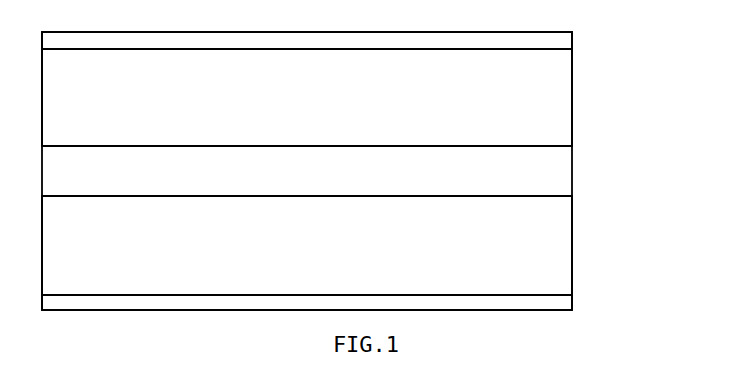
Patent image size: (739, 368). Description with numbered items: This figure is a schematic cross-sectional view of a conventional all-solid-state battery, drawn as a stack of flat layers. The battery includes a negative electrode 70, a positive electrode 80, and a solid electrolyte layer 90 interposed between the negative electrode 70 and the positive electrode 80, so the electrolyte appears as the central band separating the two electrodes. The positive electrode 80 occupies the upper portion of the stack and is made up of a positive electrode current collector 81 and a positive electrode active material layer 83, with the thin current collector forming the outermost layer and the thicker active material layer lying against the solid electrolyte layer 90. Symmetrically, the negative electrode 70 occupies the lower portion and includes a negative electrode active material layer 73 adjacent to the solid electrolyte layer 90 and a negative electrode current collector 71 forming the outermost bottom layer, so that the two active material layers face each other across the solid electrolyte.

The positive electrode 80 is at (650, 43).
The positive electrode current collector 81 is at (572, 41).
The positive electrode active material layer 83 is at (572, 95).
The solid electrolyte layer 90 is at (572, 172).
The negative electrode 70 is at (650, 240).
The negative electrode active material layer 73 is at (572, 237).
The negative electrode current collector 71 is at (572, 300).